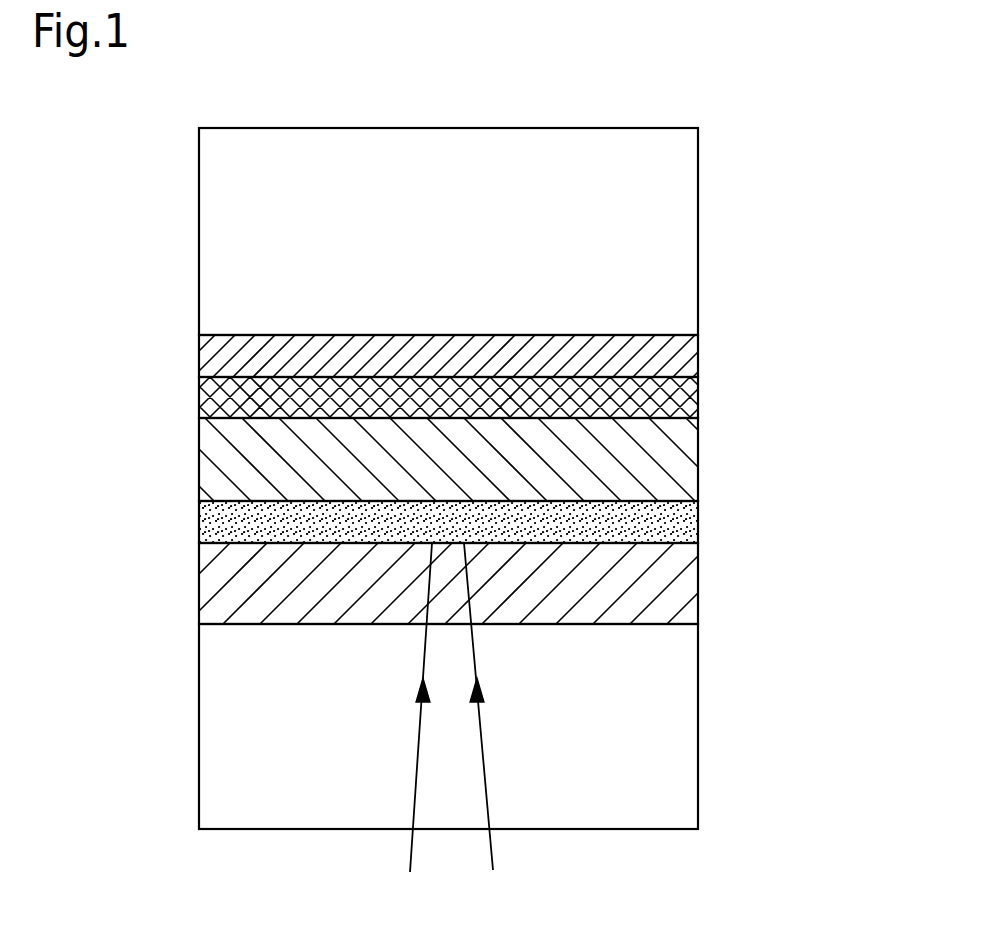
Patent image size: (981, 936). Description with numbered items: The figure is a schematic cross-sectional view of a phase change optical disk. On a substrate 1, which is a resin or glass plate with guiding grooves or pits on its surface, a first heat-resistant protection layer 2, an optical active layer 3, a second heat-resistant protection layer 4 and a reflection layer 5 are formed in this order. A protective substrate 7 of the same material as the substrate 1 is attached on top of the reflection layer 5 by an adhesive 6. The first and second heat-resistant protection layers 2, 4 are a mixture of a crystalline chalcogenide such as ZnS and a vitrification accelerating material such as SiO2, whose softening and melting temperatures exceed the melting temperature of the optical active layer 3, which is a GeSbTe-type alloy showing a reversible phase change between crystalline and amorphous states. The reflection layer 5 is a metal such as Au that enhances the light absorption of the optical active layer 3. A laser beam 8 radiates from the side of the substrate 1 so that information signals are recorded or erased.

The substrate 1 is at (672, 758).
The first heat-resistant protection layer 2 is at (673, 594).
The optical active layer 3 is at (680, 521).
The second heat-resistant protection layer 4 is at (672, 465).
The reflection layer 5 is at (677, 394).
The adhesive 6 is at (673, 355).
The protective substrate 7 is at (673, 243).
The laser beam 8 is at (493, 847).